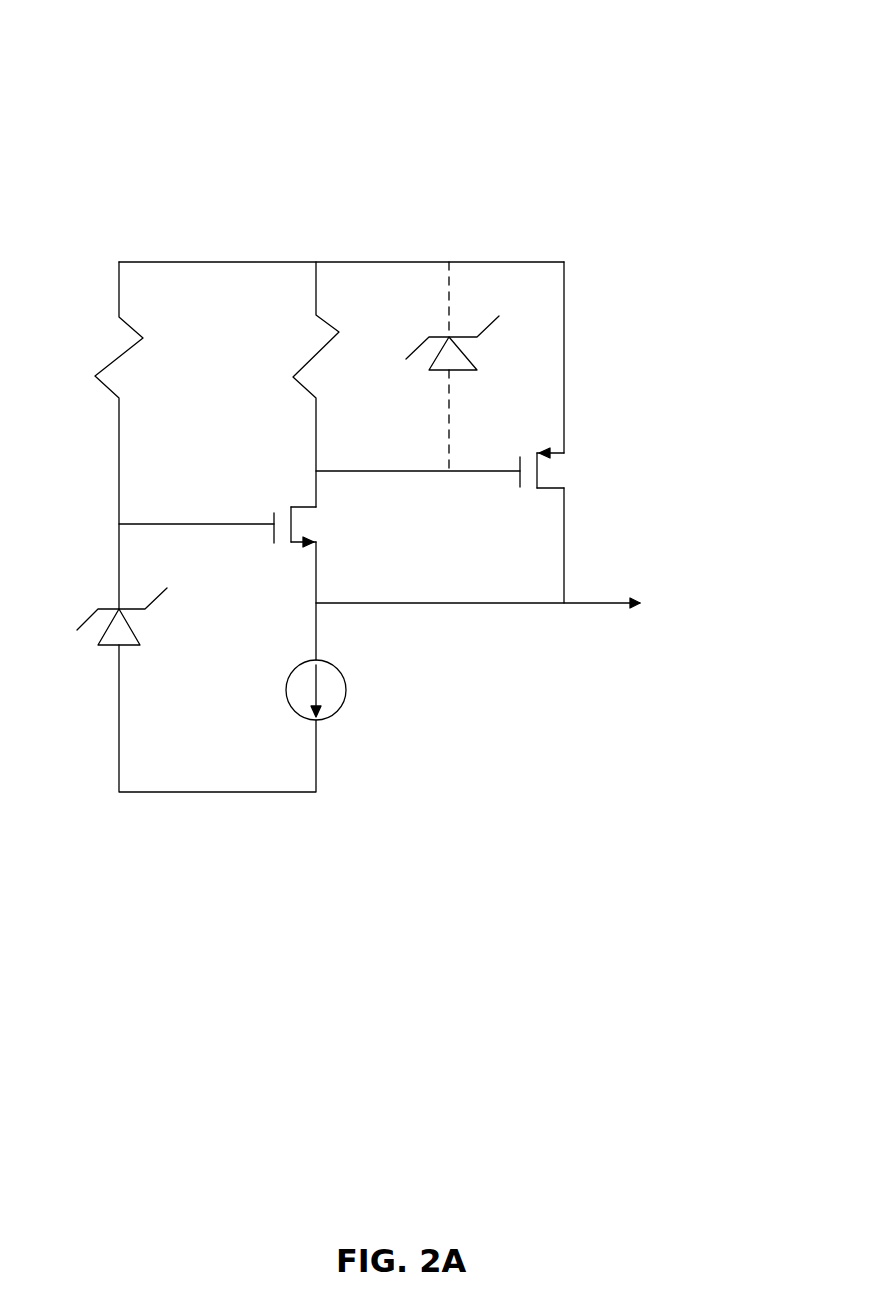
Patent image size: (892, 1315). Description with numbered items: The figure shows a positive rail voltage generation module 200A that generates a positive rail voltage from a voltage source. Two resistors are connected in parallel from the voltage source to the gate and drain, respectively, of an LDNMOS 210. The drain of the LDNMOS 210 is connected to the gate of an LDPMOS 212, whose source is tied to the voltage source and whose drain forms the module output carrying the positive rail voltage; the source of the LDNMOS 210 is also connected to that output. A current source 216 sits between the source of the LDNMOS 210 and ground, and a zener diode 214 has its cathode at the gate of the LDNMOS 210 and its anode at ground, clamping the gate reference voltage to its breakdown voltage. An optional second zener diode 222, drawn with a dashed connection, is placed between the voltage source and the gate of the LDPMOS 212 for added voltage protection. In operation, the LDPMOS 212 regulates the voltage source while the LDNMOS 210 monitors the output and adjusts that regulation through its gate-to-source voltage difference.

The positive rail voltage generation module 200A is at (762, 29).
The LDNMOS 210 is at (346, 536).
The LDPMOS 212 is at (587, 460).
The zener diode 214 is at (98, 616).
The current source 216 is at (321, 690).
The second zener diode 222 is at (464, 343).